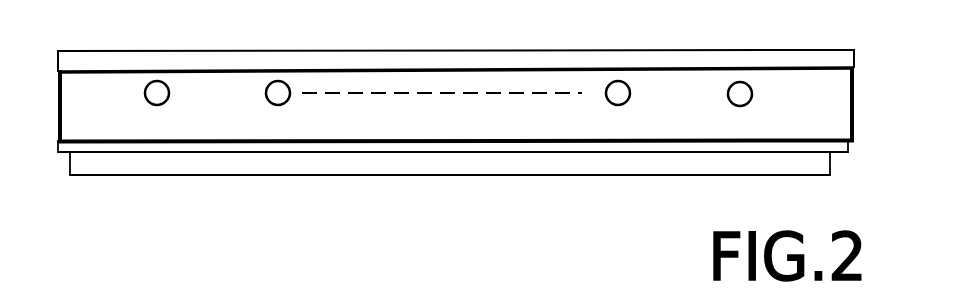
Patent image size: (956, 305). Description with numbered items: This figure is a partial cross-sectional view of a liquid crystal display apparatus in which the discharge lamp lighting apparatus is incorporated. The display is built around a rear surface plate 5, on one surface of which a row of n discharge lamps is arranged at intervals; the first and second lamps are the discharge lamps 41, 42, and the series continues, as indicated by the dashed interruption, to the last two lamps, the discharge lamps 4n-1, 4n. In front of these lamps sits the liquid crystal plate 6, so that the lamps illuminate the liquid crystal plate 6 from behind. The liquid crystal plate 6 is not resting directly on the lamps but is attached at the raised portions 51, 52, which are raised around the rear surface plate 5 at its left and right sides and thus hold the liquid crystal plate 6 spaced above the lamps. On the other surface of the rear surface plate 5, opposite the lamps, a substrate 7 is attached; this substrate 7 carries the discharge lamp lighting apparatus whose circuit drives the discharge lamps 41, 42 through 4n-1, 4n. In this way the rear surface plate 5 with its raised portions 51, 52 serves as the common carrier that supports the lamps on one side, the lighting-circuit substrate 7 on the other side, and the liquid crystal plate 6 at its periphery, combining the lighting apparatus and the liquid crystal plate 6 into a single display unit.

The rear surface plate 5 is at (107, 143).
The raised portion 51 is at (58, 112).
The raised portion 52 is at (851, 118).
The liquid crystal plate 6 is at (102, 51).
The substrate 7 is at (307, 152).
The discharge lamp 41 is at (145, 93).
The discharge lamp 42 is at (272, 92).
The discharge lamp 4n-1 is at (608, 97).
The discharge lamp 4n is at (736, 92).